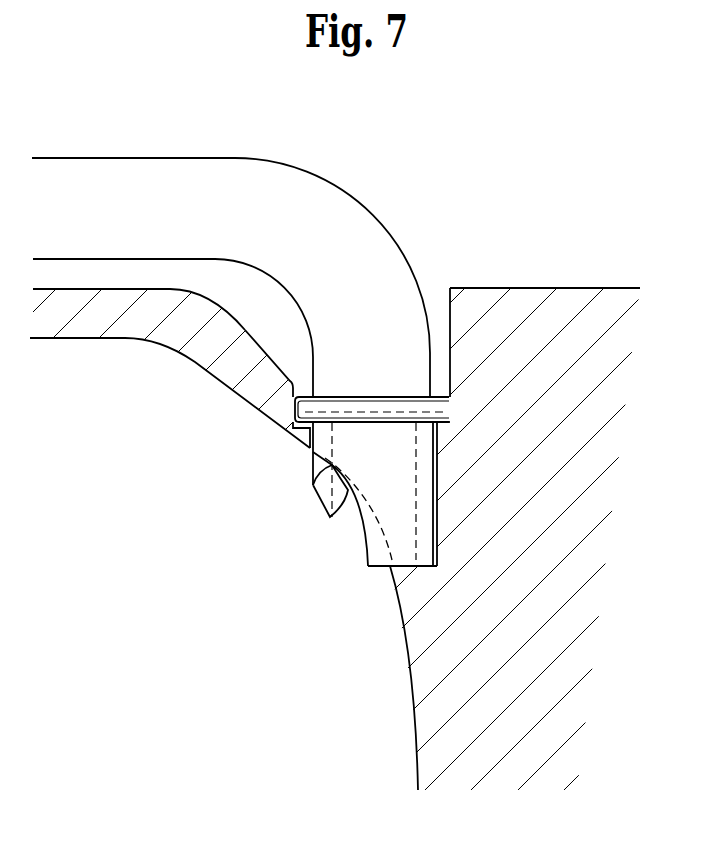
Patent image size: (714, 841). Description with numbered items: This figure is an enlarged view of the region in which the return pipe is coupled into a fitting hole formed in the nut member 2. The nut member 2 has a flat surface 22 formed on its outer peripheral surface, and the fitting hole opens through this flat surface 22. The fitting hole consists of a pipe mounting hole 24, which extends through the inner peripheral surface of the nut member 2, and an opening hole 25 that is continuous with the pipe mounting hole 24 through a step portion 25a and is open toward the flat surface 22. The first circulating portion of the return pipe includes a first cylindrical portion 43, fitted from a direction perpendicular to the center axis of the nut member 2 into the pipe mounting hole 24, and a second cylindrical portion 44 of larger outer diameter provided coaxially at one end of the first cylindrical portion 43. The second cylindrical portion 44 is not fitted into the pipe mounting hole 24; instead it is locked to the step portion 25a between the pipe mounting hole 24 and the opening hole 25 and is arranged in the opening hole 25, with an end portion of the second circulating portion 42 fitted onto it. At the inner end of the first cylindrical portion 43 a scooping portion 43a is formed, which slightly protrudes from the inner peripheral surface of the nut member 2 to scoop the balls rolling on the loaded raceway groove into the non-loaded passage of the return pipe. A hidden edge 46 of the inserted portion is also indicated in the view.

The nut member 2 is at (578, 474).
The flat surface 22 is at (540, 288).
The pipe mounting hole 24 is at (431, 492).
The opening hole 25 is at (450, 342).
The step portion 25a is at (472, 455).
The second circulating portion 42 is at (358, 220).
The first cylindrical portion 43 is at (405, 558).
The scooping portion 43a is at (326, 495).
The second cylindrical portion 44 is at (305, 410).
The hidden edge 46 is at (413, 533).